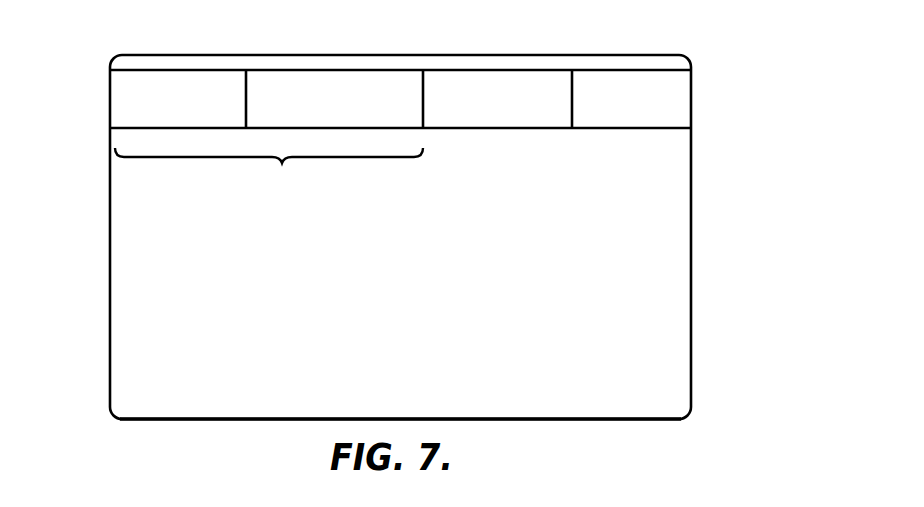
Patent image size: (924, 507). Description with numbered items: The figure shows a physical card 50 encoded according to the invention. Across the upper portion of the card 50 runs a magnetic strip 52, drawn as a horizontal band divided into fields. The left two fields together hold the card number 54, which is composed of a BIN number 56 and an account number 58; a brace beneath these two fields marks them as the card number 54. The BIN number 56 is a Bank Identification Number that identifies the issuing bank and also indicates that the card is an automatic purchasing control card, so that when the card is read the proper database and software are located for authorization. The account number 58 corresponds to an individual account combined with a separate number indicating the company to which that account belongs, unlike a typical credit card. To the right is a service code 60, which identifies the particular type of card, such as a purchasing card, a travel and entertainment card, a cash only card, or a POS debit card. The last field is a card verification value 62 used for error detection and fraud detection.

The card 50 is at (722, 97).
The magnetic strip 52 is at (97, 101).
The card number 54 is at (285, 169).
The BIN number 56 is at (213, 69).
The account number 58 is at (385, 72).
The service code 60 is at (508, 72).
The card verification value 62 is at (628, 72).